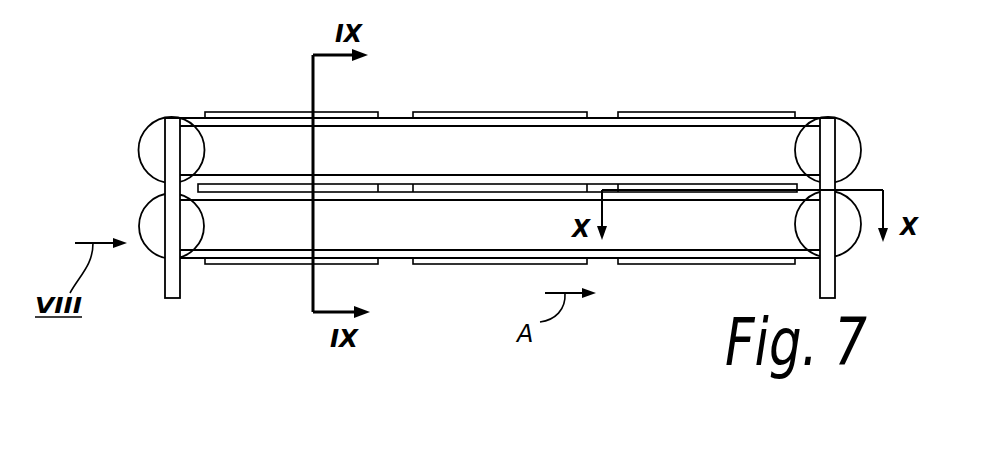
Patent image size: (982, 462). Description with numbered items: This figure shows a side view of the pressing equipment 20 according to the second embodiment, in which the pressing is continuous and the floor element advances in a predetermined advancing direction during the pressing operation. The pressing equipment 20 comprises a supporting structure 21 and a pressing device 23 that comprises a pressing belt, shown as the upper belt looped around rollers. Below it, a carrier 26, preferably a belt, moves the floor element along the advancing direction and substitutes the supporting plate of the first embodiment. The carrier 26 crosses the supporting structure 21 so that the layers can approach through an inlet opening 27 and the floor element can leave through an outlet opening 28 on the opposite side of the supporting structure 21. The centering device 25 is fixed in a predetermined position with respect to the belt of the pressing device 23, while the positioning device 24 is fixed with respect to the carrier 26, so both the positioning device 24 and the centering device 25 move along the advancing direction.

The pressing equipment 20 is at (138, 88).
The supporting structure 21 is at (175, 293).
The pressing device 23 is at (197, 121).
The positioning device 24 is at (370, 188).
The centering device 25 is at (382, 185).
The carrier 26 is at (202, 196).
The inlet opening 27 is at (127, 172).
The outlet opening 28 is at (863, 172).